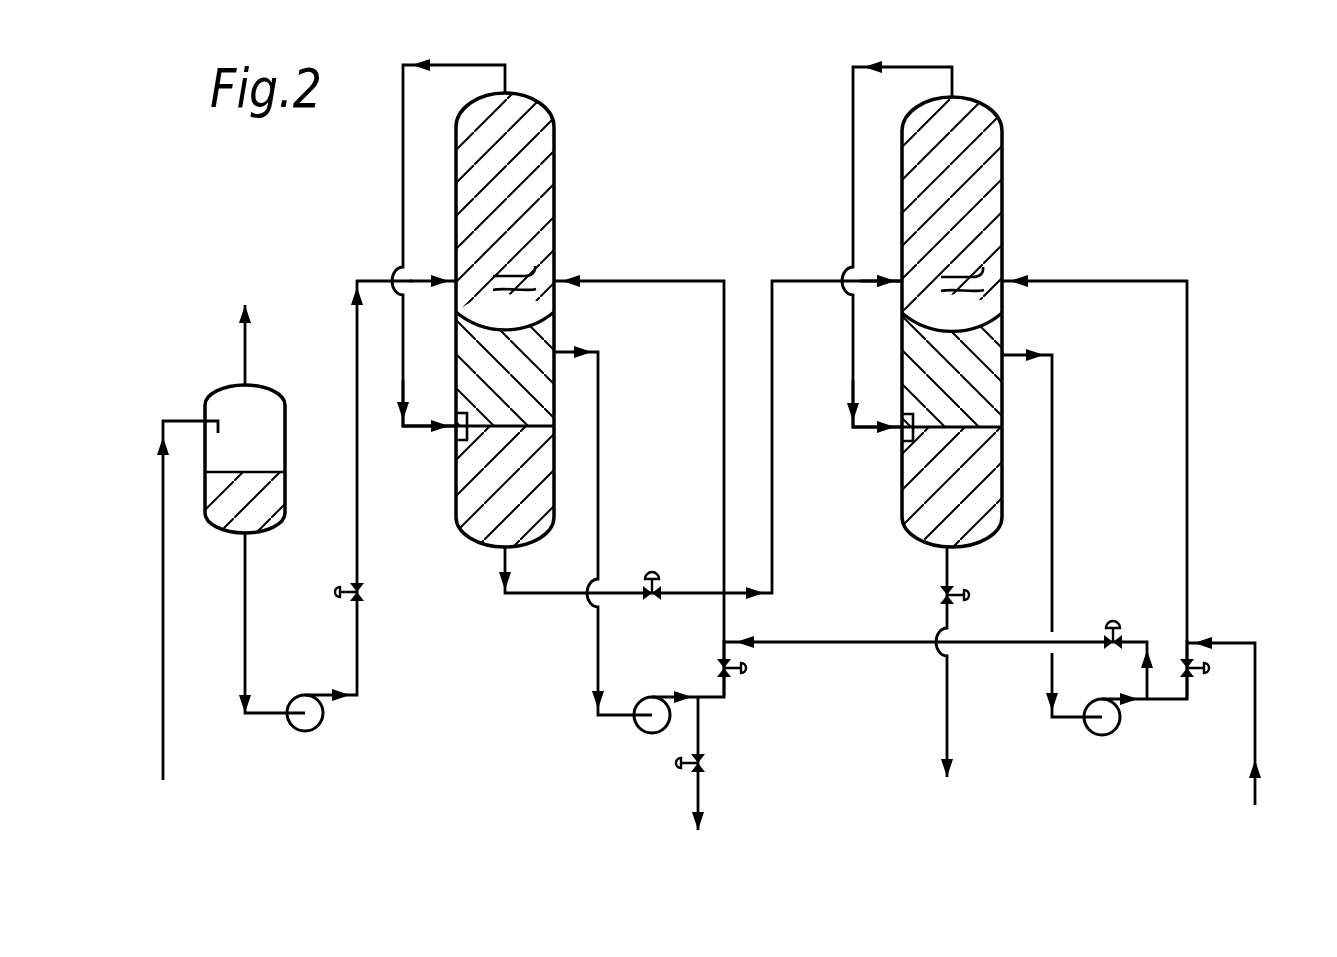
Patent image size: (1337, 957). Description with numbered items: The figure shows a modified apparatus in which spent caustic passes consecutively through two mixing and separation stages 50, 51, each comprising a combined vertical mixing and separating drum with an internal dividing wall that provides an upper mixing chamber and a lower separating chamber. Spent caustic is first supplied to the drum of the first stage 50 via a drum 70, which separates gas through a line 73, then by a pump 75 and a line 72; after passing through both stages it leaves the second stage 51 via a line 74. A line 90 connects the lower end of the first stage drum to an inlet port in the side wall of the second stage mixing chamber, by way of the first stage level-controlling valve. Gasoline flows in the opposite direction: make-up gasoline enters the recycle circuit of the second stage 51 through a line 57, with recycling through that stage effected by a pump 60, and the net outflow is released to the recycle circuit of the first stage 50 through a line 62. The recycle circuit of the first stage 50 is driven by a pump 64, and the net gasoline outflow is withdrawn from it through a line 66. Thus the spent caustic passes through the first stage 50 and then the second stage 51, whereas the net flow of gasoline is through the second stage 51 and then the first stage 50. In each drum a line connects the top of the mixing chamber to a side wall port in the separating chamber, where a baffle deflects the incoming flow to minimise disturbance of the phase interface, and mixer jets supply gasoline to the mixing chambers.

The first mixing and separation stage 50 is at (524, 320).
The second mixing and separation stage 51 is at (969, 302).
The make-up gasoline line 57 is at (1256, 690).
The pump 60 is at (1102, 735).
The net outflow line 62 is at (857, 644).
The pump 64 is at (652, 697).
The net gasoline outflow line 66 is at (700, 735).
The drum 70 is at (235, 385).
The spent caustic supply line 72 is at (358, 516).
The gas line 73 is at (246, 358).
The spent caustic outlet line 74 is at (947, 707).
The pump 75 is at (322, 723).
The line 90 is at (545, 596).